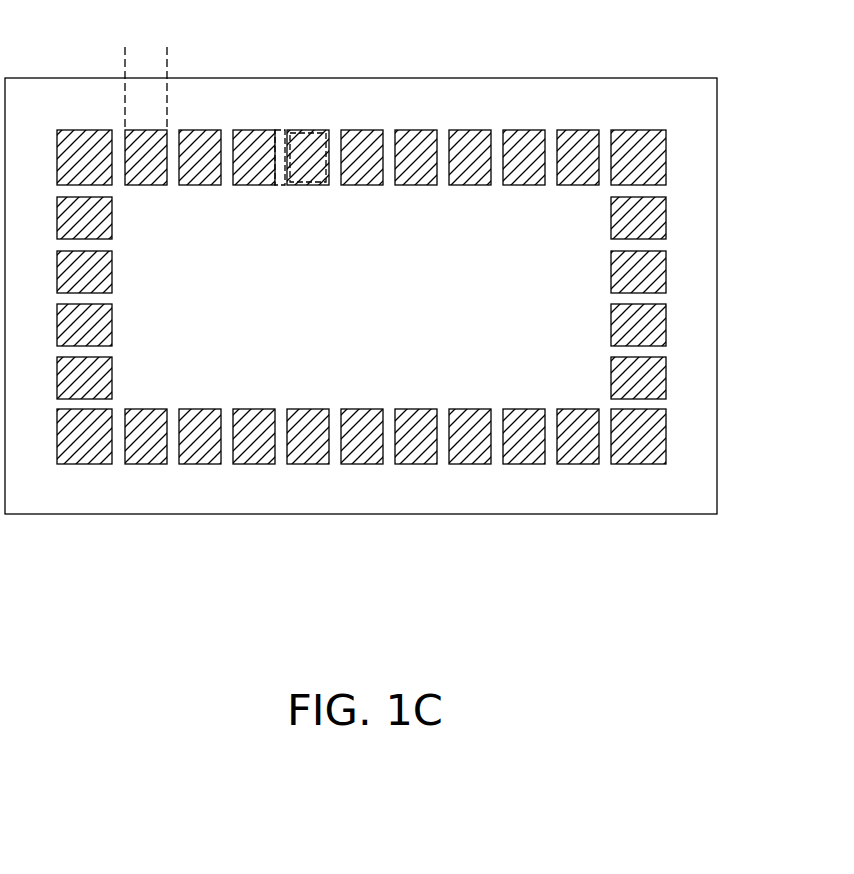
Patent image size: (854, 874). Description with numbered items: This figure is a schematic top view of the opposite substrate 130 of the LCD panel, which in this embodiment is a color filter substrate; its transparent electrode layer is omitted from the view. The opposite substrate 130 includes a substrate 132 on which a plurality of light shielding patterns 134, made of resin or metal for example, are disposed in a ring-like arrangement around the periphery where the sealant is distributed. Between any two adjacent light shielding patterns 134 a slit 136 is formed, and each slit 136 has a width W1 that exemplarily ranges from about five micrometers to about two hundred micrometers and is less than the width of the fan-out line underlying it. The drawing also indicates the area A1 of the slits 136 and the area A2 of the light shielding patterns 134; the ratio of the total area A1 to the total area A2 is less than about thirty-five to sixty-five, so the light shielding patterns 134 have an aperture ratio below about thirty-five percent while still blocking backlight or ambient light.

The opposite substrate 130 is at (743, 607).
The substrate 132 is at (87, 108).
The light shielding patterns 134 is at (313, 132).
The slit 136 is at (280, 132).
The width of slit W1 is at (166, 53).
The area of slits A1 is at (278, 132).
The area of light shielding patterns A2 is at (300, 132).